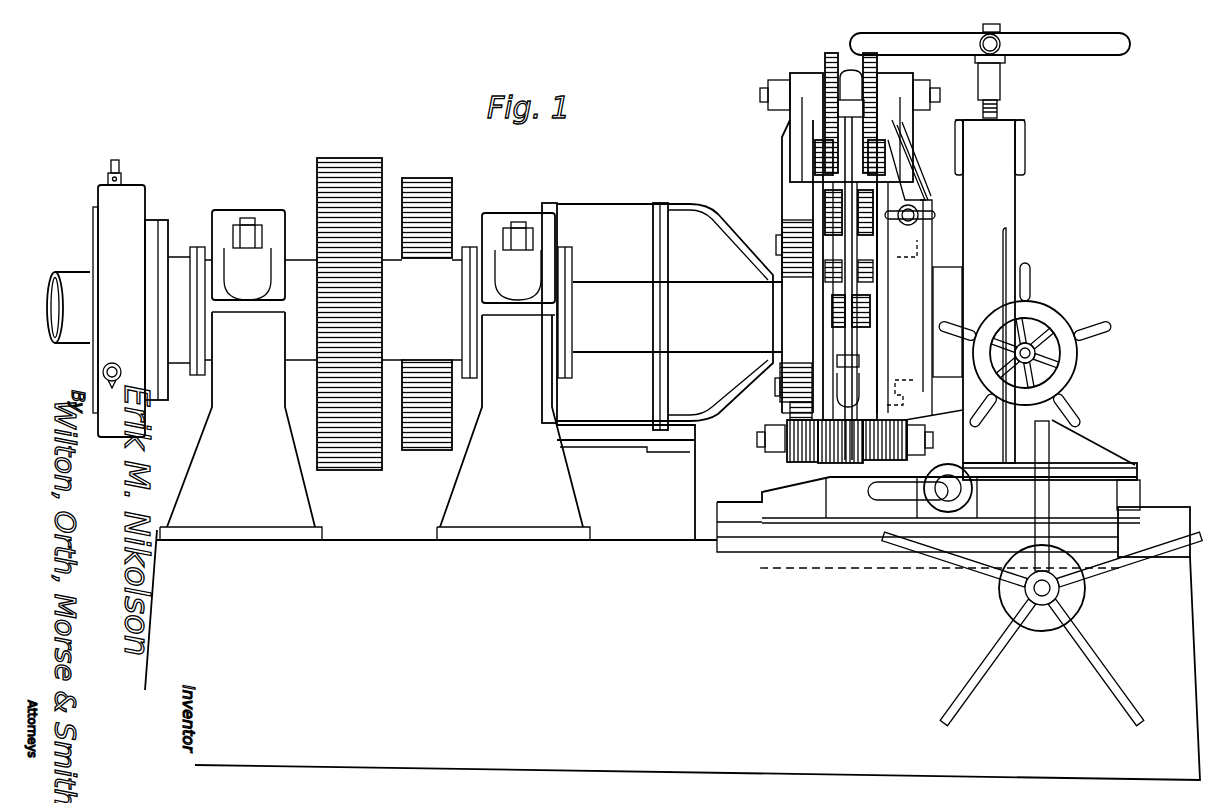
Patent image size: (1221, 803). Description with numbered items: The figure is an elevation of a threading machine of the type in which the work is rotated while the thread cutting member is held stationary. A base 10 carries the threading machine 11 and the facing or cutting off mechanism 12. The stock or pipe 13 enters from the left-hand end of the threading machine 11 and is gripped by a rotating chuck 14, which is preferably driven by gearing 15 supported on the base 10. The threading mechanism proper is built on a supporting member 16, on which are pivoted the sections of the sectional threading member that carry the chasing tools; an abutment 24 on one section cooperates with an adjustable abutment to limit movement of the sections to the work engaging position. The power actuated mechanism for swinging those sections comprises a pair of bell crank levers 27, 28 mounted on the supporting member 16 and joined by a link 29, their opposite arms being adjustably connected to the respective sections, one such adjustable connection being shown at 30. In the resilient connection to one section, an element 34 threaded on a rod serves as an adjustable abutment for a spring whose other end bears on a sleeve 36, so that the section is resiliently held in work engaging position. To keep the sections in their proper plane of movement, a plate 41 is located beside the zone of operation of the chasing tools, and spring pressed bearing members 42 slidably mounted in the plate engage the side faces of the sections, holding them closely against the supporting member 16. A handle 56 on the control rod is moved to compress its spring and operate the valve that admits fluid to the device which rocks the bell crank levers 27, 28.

The base 10 is at (672, 653).
The threading machine 11 is at (662, 351).
The facing or cutting off mechanism 12 is at (1017, 221).
The stock or pipe 13 is at (78, 273).
The rotating chuck 14 is at (146, 187).
The gearing 15 is at (382, 160).
The supporting member 16 is at (913, 313).
The abutment 24 is at (838, 283).
The bell crank lever 27 is at (826, 65).
The bell crank lever 28 is at (818, 460).
The link 29 is at (852, 292).
The adjustable connection 30 is at (868, 352).
The element 34 is at (828, 218).
The sleeve 36 is at (815, 153).
The plate 41 is at (780, 213).
The bearing members 42 is at (776, 242).
The handle 56 is at (918, 210).